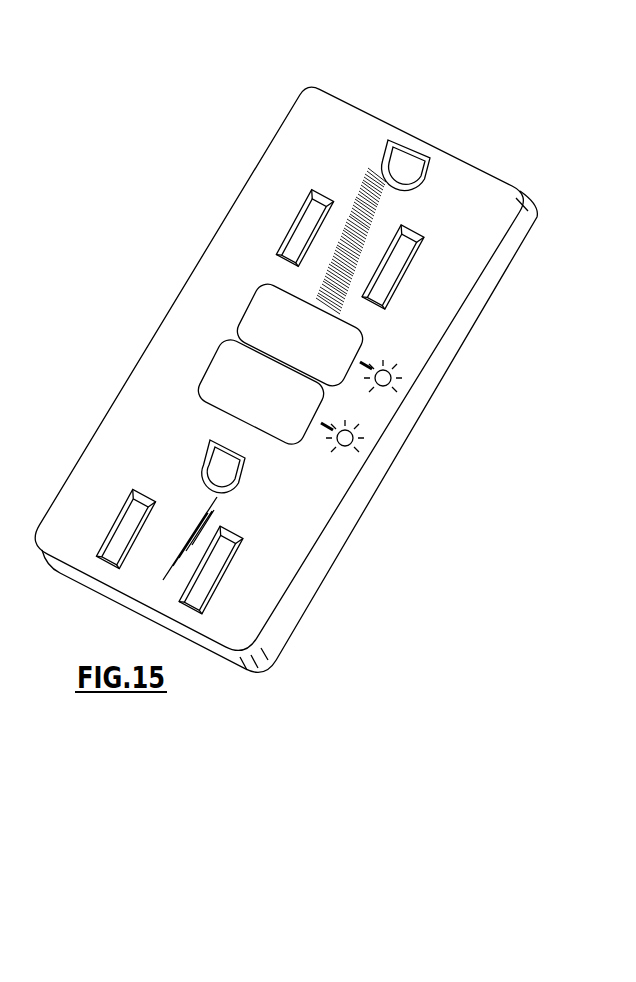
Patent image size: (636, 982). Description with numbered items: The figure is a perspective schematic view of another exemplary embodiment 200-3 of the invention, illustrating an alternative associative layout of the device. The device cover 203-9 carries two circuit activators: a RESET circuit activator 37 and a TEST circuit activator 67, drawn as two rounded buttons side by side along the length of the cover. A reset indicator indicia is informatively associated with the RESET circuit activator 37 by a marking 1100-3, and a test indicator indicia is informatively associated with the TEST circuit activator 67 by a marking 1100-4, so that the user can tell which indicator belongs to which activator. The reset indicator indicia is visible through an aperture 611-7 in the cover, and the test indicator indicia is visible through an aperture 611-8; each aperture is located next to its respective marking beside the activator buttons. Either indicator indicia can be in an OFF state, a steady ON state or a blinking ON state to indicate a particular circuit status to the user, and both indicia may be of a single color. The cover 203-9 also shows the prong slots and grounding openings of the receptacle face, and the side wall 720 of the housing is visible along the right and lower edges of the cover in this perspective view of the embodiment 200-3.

The exemplary embodiment 200-3 is at (331, 358).
The device cover 203-9 is at (306, 113).
The housing side wall 720 is at (473, 183).
The TEST circuit activator 67 is at (270, 306).
The RESET circuit activator 37 is at (217, 397).
The aperture 611-8 is at (394, 377).
The aperture 611-7 is at (356, 445).
The marking 1100-4 is at (367, 365).
The marking 1100-3 is at (326, 429).